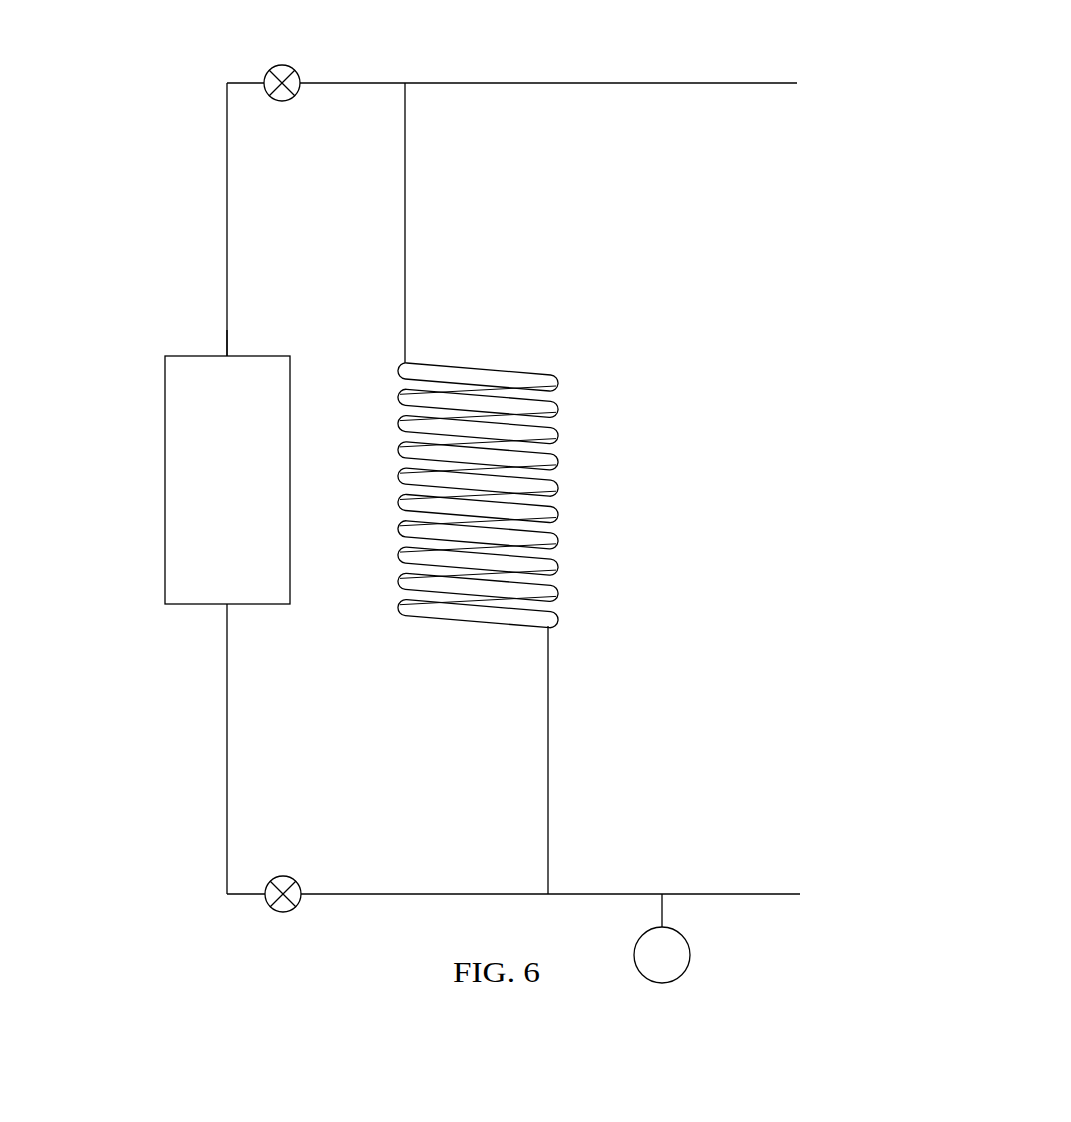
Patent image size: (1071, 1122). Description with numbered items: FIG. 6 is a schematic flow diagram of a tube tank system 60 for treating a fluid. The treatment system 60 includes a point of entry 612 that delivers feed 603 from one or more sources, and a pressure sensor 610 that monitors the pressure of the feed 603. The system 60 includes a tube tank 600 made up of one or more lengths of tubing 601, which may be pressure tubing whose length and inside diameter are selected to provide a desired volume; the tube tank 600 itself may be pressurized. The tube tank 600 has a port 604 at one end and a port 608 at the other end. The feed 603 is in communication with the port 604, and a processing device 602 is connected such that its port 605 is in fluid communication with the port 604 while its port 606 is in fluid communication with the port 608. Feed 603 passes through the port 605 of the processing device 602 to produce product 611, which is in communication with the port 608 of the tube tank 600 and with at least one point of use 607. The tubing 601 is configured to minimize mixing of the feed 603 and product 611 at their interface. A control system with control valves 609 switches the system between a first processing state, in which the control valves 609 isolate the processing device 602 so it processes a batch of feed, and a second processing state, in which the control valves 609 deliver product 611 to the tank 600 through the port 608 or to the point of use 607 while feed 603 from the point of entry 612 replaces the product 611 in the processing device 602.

The tube tank system 60 is at (165, 121).
The tube tank 600 is at (538, 495).
The tubing 601 is at (562, 502).
The processing device 602 is at (208, 502).
The feed 603 is at (580, 917).
The port 604 is at (554, 640).
The port 605 is at (237, 619).
The port 606 is at (221, 347).
The point of use 607 is at (799, 107).
The port 608 is at (418, 355).
The control valves 609 is at (266, 67).
The pressure sensor 610 is at (685, 964).
The product 611 is at (229, 190).
The point of entry 612 is at (741, 861).